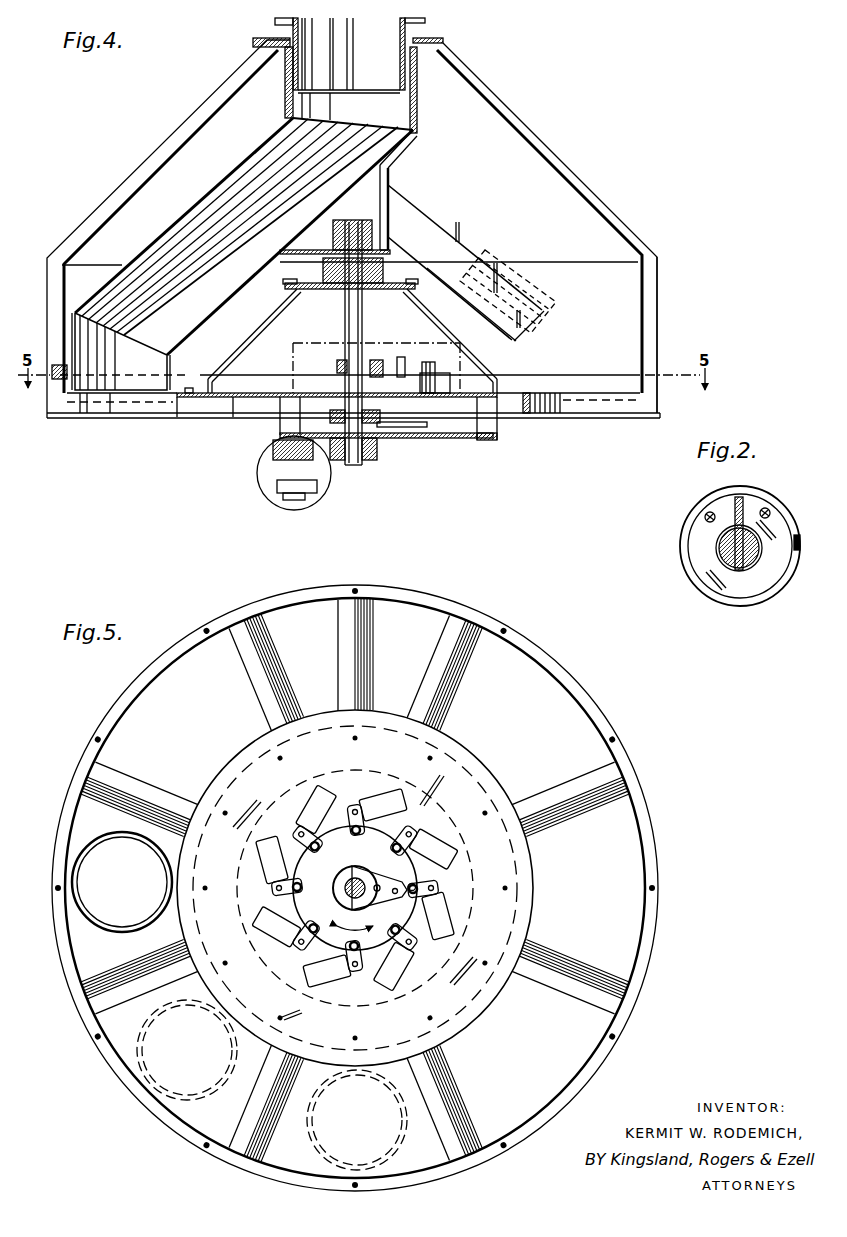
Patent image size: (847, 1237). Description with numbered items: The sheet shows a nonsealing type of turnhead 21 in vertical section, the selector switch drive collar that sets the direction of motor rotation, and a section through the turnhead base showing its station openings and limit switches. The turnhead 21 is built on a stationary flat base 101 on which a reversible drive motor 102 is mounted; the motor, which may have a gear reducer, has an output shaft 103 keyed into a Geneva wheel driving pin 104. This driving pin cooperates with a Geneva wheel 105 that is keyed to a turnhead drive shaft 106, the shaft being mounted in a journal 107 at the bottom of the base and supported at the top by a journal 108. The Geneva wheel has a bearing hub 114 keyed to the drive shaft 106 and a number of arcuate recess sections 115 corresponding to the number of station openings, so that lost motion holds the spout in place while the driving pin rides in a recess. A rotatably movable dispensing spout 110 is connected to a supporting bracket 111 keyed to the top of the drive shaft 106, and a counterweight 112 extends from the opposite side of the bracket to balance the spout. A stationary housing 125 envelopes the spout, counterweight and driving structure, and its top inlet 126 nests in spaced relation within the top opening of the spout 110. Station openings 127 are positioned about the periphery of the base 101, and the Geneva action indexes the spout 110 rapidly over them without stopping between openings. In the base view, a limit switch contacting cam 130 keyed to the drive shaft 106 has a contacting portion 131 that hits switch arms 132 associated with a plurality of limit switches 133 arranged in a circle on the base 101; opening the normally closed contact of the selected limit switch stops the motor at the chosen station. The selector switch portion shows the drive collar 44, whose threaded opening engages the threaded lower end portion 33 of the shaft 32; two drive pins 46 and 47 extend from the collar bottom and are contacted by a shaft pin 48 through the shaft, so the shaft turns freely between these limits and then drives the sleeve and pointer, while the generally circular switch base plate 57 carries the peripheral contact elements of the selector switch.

In FIG. 4, the nonsealing turnhead 21 is at (597, 180).
In FIG. 5, the nonsealing turnhead 21 is at (668, 832).
In FIG. 2, the shaft 32 is at (722, 548).
In FIG. 2, the threaded lower end portion 33 is at (722, 556).
In FIG. 2, the drive collar 44 is at (733, 592).
In FIG. 2, the drive pin 46 is at (705, 516).
In FIG. 2, the drive pin 47 is at (766, 510).
In FIG. 2, the shaft pin 48 is at (752, 562).
In FIG. 2, the switch base plate 57 is at (712, 600).
In FIG. 4, the stationary flat base 101 is at (500, 400).
In FIG. 5, the stationary flat base 101 is at (532, 885).
In FIG. 4, the reversible drive motor 102 is at (273, 480).
In FIG. 4, the output shaft 103 is at (293, 453).
In FIG. 4, the Geneva wheel driving pin 104 is at (267, 423).
In FIG. 4, the Geneva wheel 105 is at (403, 430).
In FIG. 4, the turnhead drive shaft 106 is at (357, 460).
In FIG. 5, the turnhead drive shaft 106 is at (355, 878).
In FIG. 4, the journal 107 is at (333, 453).
In FIG. 4, the journal 108 is at (383, 268).
In FIG. 4, the dispensing spout 110 is at (167, 233).
In FIG. 5, the dispensing spout 110 is at (112, 930).
In FIG. 4, the supporting bracket 111 is at (392, 212).
In FIG. 4, the counterweight 112 is at (543, 312).
In FIG. 4, the bearing hub 114 is at (380, 412).
In FIG. 4, the arcuate recess sections 115 is at (417, 430).
In FIG. 4, the stationary housing 125 is at (645, 247).
In FIG. 4, the top inlet 126 is at (407, 32).
In FIG. 4, the station openings 127 is at (120, 403).
In FIG. 5, the station openings 127 is at (300, 627).
In FIG. 4, the limit switch contacting cam 130 is at (387, 357).
In FIG. 5, the limit switch contacting cam 130 is at (392, 873).
In FIG. 4, the contacting portion 131 is at (402, 357).
In FIG. 5, the contacting portion 131 is at (432, 899).
In FIG. 4, the switch arms 132 is at (423, 363).
In FIG. 5, the switch arms 132 is at (396, 840).
In FIG. 4, the limit switches 133 is at (447, 383).
In FIG. 5, the limit switches 133 is at (441, 863).